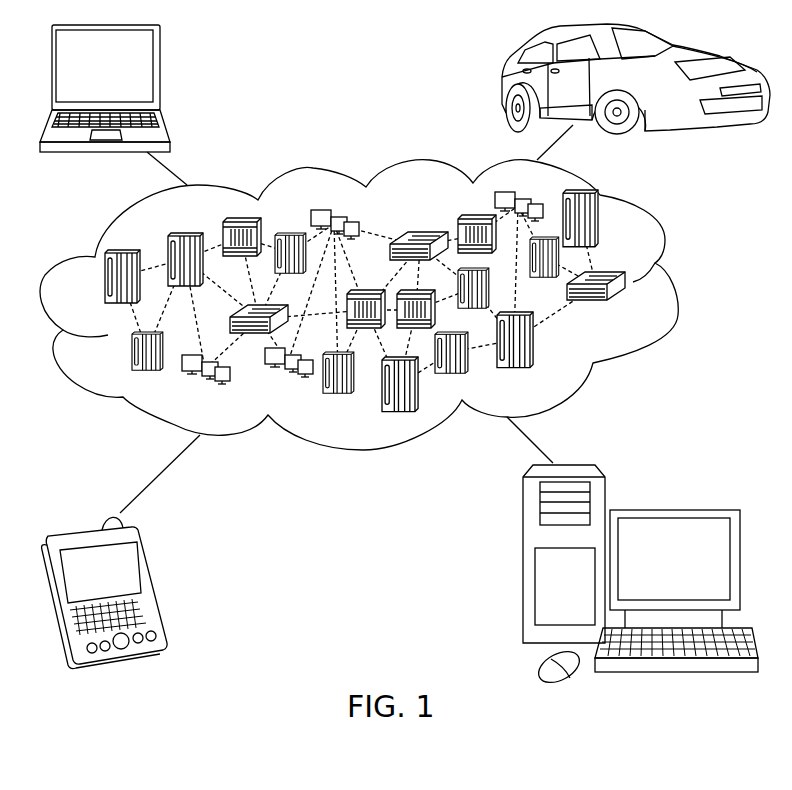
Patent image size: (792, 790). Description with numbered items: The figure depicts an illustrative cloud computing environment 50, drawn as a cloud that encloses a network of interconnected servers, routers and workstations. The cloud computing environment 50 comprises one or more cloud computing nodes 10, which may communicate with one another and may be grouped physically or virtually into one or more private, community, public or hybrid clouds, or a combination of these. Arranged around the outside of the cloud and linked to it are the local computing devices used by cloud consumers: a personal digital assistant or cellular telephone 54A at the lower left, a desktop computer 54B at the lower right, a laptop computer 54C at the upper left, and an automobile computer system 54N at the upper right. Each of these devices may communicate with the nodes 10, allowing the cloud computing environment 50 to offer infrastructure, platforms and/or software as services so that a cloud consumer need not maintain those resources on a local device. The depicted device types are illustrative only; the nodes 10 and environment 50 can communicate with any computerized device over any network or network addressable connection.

The cloud computing nodes 10 is at (633, 309).
The cloud computing environment 50 is at (670, 283).
The personal digital assistant (PDA) or cellular telephone 54A is at (150, 582).
The desktop computer 54B is at (673, 510).
The laptop computer 54C is at (161, 70).
The automobile computer system 54N is at (500, 81).